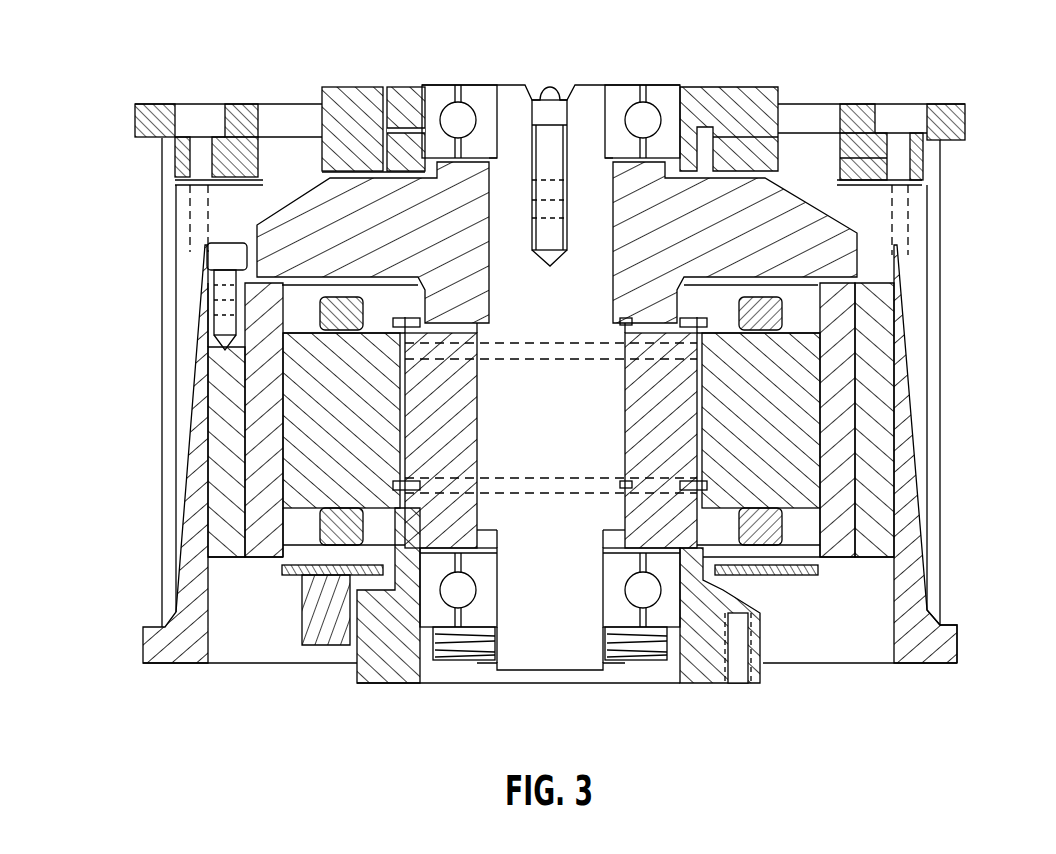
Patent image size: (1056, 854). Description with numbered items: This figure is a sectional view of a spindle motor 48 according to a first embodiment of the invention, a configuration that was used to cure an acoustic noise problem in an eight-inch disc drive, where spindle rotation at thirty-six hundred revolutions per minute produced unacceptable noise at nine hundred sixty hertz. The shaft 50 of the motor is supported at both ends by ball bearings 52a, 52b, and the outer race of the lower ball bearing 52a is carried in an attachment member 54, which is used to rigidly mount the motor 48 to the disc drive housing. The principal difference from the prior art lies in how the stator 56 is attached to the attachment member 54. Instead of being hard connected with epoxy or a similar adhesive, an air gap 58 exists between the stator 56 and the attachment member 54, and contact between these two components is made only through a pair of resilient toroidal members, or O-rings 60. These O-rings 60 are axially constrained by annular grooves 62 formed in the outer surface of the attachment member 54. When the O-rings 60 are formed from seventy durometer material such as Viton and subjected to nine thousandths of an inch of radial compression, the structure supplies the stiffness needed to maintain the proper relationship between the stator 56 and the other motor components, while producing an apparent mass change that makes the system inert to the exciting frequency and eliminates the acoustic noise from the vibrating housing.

The spindle motor 48 is at (133, 276).
The shaft 50 is at (590, 115).
The lower ball bearing 52a is at (433, 613).
The upper ball bearing 52b is at (442, 100).
The attachment member 54 is at (378, 650).
The stator 56 is at (313, 385).
The air gap 58 is at (390, 452).
The O-rings 60 is at (697, 351).
The annular grooves 62 is at (625, 343).